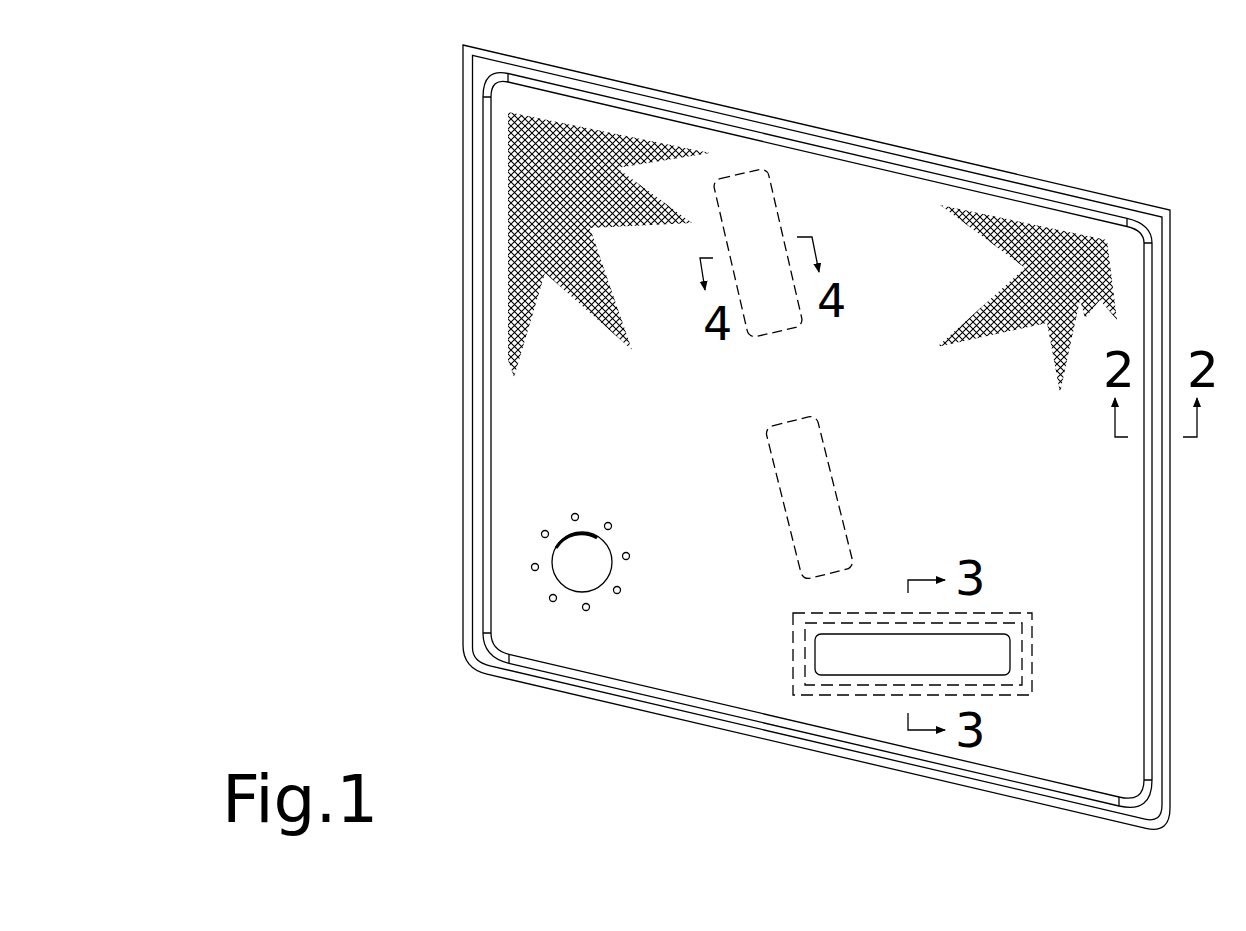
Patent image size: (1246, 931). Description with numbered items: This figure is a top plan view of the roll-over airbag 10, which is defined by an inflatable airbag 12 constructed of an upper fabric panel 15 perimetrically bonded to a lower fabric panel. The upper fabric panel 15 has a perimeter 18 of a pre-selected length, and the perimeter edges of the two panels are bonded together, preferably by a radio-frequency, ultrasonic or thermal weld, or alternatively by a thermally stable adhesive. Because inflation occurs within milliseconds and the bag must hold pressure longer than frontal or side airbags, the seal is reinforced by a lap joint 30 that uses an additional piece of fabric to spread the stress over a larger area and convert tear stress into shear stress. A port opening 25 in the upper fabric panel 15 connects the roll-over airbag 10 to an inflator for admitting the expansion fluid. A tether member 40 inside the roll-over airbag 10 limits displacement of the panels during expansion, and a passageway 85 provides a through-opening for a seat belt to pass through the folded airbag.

The roll-over airbag 10 is at (816, 415).
The inflatable airbag 12 is at (906, 138).
The upper fabric panel 15 is at (700, 451).
The perimeter 18 is at (620, 82).
The port opening 25 is at (617, 540).
The lap joint 30 is at (1007, 193).
The tether member 40 is at (783, 212).
The passageway 85 is at (990, 657).